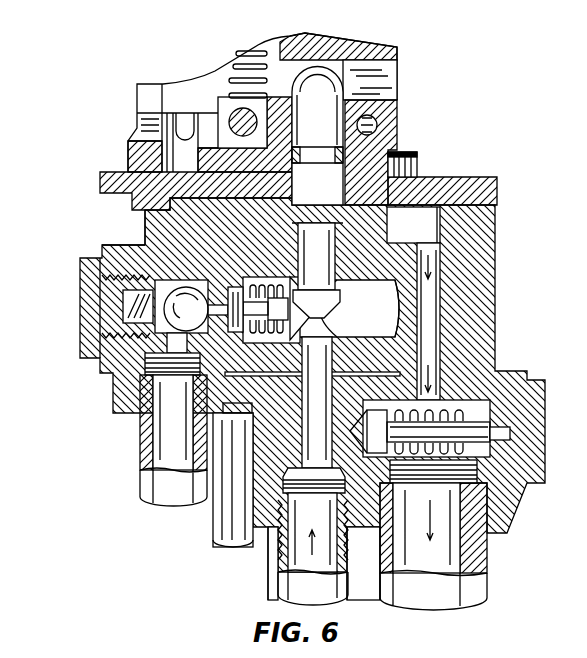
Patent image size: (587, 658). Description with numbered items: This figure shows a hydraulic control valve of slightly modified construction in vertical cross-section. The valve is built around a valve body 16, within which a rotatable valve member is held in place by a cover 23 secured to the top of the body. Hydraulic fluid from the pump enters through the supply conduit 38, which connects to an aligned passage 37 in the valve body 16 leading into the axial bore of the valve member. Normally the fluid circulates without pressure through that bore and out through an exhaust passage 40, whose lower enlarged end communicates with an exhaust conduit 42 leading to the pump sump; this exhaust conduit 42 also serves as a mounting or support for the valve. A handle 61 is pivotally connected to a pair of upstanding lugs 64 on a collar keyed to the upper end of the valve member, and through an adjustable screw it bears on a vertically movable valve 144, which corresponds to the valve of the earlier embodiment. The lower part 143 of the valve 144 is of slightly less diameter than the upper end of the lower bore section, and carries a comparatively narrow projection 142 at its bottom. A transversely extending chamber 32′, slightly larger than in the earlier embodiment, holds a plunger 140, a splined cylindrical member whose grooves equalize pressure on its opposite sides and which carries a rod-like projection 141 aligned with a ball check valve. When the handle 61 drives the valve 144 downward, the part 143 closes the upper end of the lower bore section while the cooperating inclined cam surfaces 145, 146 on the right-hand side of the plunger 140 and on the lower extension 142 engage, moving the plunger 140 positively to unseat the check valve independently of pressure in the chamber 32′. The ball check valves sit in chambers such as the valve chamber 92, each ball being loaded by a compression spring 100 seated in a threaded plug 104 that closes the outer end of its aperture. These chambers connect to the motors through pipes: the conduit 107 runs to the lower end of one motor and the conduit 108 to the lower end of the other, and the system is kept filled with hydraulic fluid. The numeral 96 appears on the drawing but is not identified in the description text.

The valve body 16 is at (480, 263).
The cover 23 is at (453, 183).
The chamber 32′ is at (380, 327).
The passage 37 is at (300, 397).
The supply conduit 38 is at (290, 585).
The exhaust passage 40 is at (427, 355).
The exhaust conduit 42 is at (483, 587).
The handle 61 is at (368, 42).
The upstanding lugs 64 is at (391, 127).
The valve chamber 92 is at (137, 252).
The bore 96 is at (143, 240).
The compression spring 100 is at (117, 302).
The plug 104 is at (87, 327).
The conduit 107 is at (227, 523).
The conduit 108 is at (150, 487).
The plunger 140 is at (283, 352).
The rod-like projection 141 is at (225, 268).
The projection 142 is at (312, 246).
The part of the valve 143 is at (343, 223).
The valve 144 is at (396, 83).
The inclined surface 145 is at (344, 271).
The inclined surface 146 is at (240, 266).